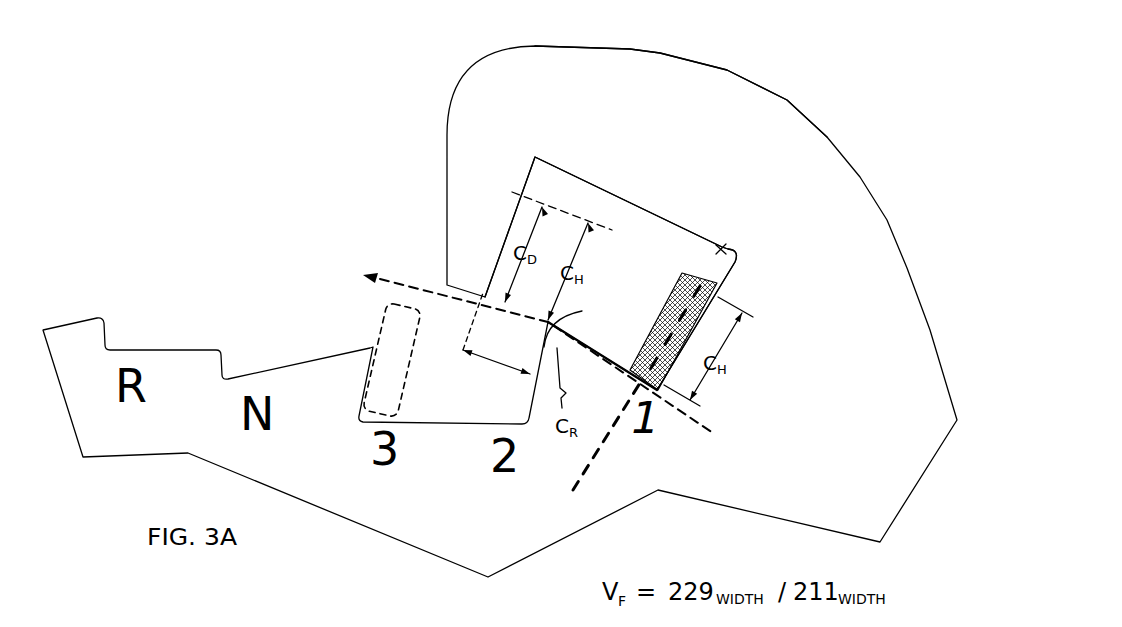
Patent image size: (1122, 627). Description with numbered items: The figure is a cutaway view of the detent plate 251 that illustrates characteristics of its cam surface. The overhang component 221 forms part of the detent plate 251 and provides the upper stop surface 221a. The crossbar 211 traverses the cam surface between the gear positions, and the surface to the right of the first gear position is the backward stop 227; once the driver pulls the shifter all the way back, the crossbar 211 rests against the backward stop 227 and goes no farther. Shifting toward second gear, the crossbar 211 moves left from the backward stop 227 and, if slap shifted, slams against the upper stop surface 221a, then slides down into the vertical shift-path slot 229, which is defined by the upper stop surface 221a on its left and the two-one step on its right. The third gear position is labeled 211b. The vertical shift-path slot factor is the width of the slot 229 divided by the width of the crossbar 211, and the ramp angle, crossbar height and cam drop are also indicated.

The overhang component 221 is at (732, 83).
The upper stop surface 221a is at (531, 192).
The backward stop 227 is at (728, 274).
The crossbar 211 is at (712, 287).
The detent plate 251 is at (850, 153).
The vertical shift-path slot 229 is at (488, 358).
The third gear position 211b is at (377, 342).